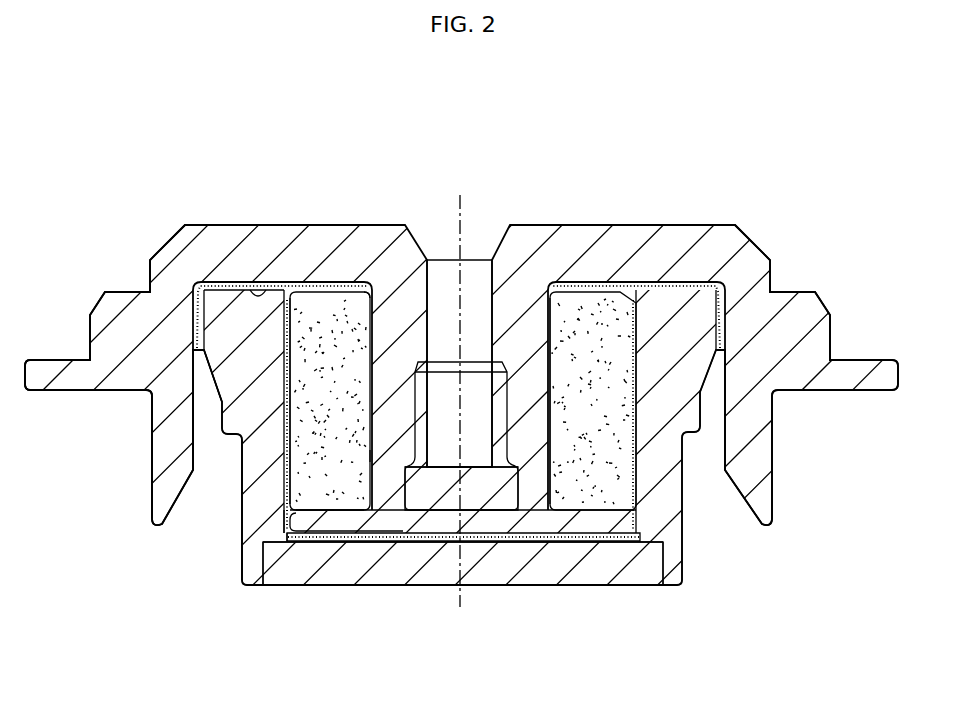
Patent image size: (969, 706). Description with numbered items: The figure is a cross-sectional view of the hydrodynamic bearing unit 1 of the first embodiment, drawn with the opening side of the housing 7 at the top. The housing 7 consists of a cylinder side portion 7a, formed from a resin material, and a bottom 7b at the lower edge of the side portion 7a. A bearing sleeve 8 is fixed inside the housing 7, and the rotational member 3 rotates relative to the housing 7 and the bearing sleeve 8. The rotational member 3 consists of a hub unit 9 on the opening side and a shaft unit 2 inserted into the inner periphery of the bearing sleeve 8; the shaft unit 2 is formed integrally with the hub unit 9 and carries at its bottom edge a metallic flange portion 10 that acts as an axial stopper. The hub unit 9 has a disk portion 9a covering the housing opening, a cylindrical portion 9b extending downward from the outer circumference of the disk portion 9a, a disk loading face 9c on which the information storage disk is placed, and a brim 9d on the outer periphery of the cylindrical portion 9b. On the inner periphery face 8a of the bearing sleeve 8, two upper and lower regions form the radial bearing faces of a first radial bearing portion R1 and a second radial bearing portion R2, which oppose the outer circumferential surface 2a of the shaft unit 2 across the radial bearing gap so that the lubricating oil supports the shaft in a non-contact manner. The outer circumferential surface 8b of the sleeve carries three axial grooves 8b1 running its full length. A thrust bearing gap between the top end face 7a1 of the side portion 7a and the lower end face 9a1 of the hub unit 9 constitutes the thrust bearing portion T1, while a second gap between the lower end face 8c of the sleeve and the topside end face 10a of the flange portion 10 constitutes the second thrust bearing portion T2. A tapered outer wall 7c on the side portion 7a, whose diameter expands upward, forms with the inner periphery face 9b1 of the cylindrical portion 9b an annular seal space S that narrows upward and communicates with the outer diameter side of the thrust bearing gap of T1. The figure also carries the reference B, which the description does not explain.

The hydrodynamic bearing unit 1 is at (563, 150).
The shaft unit 2 is at (530, 372).
The outer circumferential surface of the shaft unit 2a is at (577, 512).
The rotational member 3 is at (264, 222).
The housing 7 is at (624, 594).
The side portion 7a is at (250, 493).
The top end face of the side portion 7a1 is at (222, 283).
The bottom 7b is at (422, 583).
The tapered outer wall 7c is at (197, 364).
The bearing sleeve 8 is at (616, 463).
The inner periphery face of the bearing sleeve 8a is at (560, 432).
The outer circumferential surface of the bearing sleeve 8b is at (290, 406).
The grooves 8b1 is at (242, 552).
The lower end face of the bearing sleeve 8c is at (313, 513).
The hub unit 9 is at (672, 222).
The disk portion 9a is at (597, 250).
The lower end face of the hub unit 9a1 is at (281, 292).
The cylindrical portion 9b is at (167, 438).
The inner periphery face of the cylindrical portion 9b1 is at (148, 394).
The disk loading face 9c is at (130, 290).
The brim 9d is at (47, 373).
The flange portion 10 is at (562, 537).
The topside end face of the flange portion 10a is at (333, 512).
The seal space S is at (191, 332).
The thrust bearing portion T1 is at (237, 277).
The second thrust bearing portion T2 is at (327, 516).
The first radial bearing portion R1 is at (348, 364).
The second radial bearing portion R2 is at (350, 456).
The bolt insertion direction B is at (398, 186).